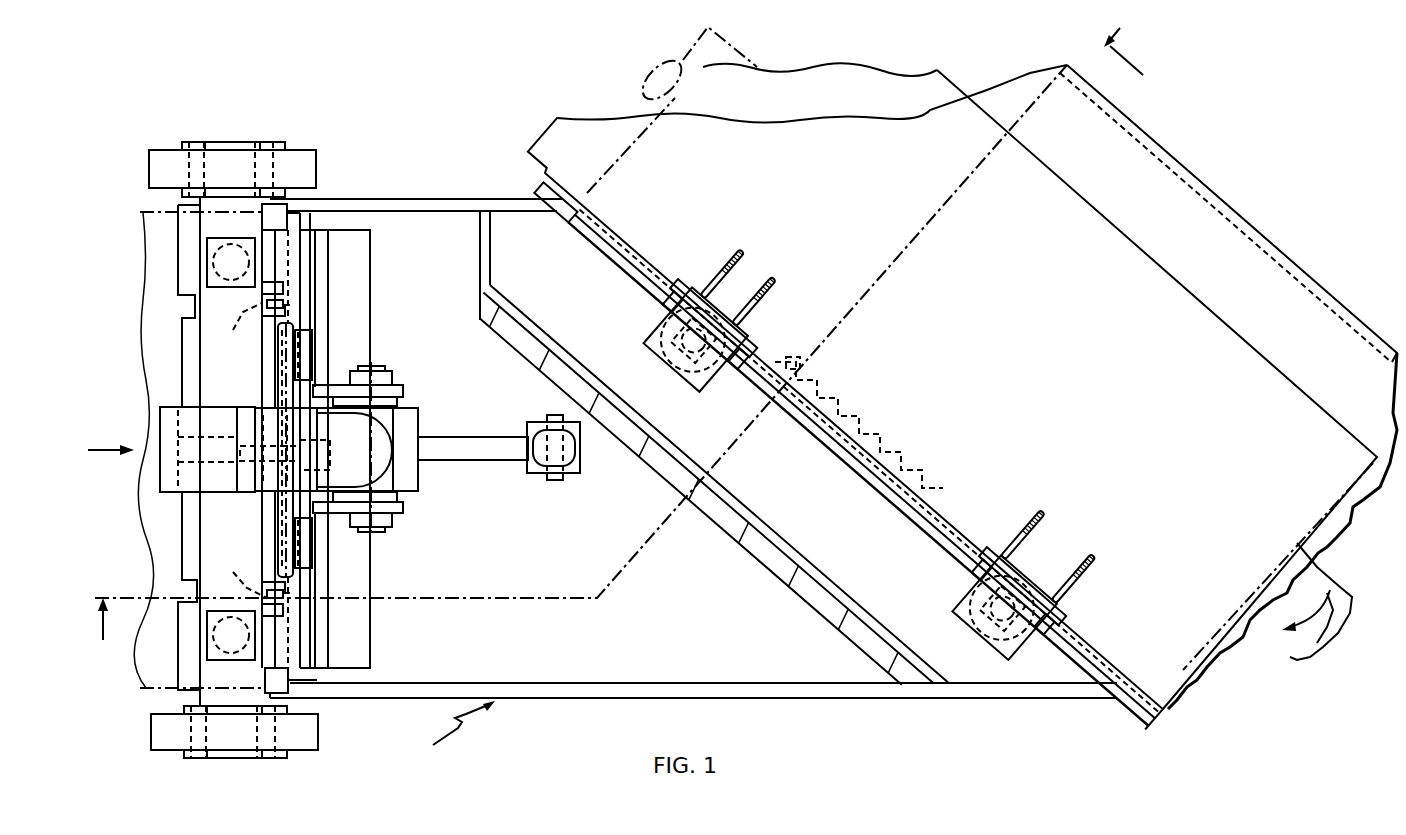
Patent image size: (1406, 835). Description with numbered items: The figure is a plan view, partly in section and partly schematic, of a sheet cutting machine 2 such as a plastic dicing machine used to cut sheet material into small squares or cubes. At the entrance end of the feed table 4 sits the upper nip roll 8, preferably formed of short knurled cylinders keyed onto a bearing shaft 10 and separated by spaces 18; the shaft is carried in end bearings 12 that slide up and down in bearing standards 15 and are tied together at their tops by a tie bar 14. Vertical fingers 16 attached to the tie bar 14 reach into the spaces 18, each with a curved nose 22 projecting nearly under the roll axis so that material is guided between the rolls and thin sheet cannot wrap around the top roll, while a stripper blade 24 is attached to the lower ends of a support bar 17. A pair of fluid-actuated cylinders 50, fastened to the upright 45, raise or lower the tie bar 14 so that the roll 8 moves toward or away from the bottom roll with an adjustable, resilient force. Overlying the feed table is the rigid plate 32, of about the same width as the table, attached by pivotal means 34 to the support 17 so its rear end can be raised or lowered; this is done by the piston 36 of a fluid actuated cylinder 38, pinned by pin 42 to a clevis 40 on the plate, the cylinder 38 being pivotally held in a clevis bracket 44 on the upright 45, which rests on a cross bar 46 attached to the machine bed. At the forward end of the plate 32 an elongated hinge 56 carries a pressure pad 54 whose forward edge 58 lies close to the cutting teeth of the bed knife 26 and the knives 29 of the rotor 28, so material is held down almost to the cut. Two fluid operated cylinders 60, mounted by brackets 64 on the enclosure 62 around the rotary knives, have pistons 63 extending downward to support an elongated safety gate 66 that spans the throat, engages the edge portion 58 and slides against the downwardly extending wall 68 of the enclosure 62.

The sheet cutting machine 2 is at (625, 398).
The feed table 4 is at (397, 203).
The nip roll 8 is at (178, 258).
The bearing shaft 10 is at (203, 166).
The end bearings 12 is at (190, 142).
The tie bar 14 is at (200, 238).
The bearing standards 15 is at (149, 178).
The vertical fingers 16 is at (286, 304).
The support bar 17 is at (303, 615).
The spaces 18 is at (190, 308).
The nose 22 is at (241, 450).
The stripper blade 24 is at (297, 680).
The bed knife 26 is at (913, 468).
The rotor 28 is at (1325, 570).
The knives 29 is at (827, 386).
The rigid plate 32 is at (682, 649).
The pivotal means 34 is at (328, 639).
The piston 36 is at (455, 440).
The fluid actuated cylinder 38 is at (383, 470).
The clevis 40 is at (527, 471).
The pin 42 is at (557, 476).
The clevis bracket 44 is at (403, 391).
The upright 45 is at (303, 348).
The cross bar 46 is at (278, 369).
The fluid-actuated cylinders 50 is at (207, 270).
The pressure pad 54 is at (762, 474).
The elongated hinge 56 is at (770, 550).
The forward edge 58 is at (943, 506).
The fluid operated cylinders 60 is at (648, 338).
The enclosure 62 is at (1237, 214).
The pistons 63 is at (682, 354).
The brackets 64 is at (717, 298).
The safety gate 66 is at (947, 542).
The wall 68 is at (917, 504).